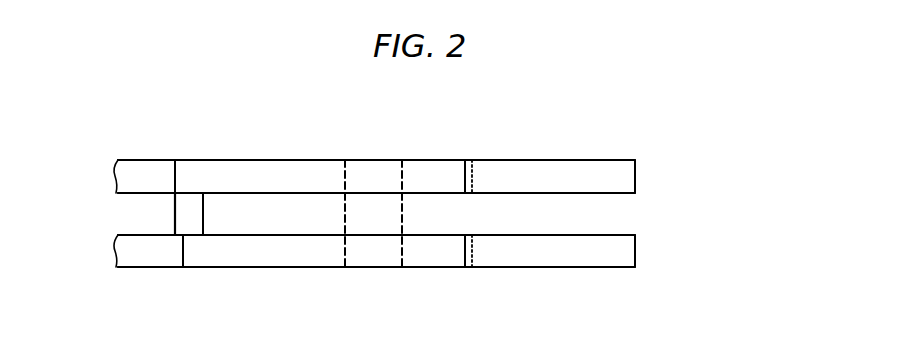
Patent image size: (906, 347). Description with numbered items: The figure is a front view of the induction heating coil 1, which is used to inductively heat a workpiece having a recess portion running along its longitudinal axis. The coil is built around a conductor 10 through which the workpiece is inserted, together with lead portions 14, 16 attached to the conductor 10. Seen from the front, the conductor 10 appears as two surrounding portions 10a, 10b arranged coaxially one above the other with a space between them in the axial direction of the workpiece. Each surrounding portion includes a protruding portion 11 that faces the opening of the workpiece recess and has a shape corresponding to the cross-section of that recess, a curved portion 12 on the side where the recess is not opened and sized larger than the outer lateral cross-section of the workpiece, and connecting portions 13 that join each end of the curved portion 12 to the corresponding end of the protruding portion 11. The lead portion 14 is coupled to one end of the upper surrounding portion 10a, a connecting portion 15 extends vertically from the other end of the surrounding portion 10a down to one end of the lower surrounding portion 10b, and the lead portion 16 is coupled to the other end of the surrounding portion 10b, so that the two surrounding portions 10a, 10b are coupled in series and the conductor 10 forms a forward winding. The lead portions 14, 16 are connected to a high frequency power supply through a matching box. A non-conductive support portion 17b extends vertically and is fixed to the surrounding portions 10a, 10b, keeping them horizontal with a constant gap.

The induction heating coil 1 is at (420, 201).
The conductor 10 is at (436, 207).
The surrounding portion 10a is at (644, 167).
The surrounding portion 10b is at (418, 250).
The protruding portion 11 is at (472, 178).
The curved portion 12 is at (252, 160).
The connecting portion 13 is at (543, 160).
The lead portion 14 is at (152, 159).
The connecting portion 15 is at (175, 218).
The lead portion 16 is at (152, 268).
The non-conductive support portion 17b is at (403, 208).